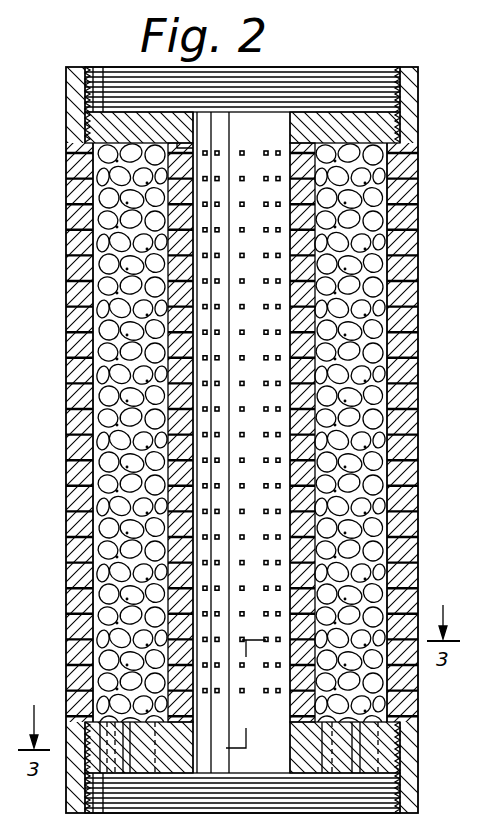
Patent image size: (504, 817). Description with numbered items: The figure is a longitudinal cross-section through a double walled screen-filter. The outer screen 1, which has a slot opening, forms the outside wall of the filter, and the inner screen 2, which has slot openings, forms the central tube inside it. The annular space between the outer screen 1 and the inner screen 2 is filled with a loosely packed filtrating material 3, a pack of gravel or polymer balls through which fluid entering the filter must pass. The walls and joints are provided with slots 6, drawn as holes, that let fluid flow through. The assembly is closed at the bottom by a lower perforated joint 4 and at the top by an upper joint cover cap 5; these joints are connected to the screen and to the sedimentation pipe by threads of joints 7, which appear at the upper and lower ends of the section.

The outer screen 1 is at (415, 548).
The inner screen 2 is at (180, 522).
The loosely packed filtrating material 3 is at (112, 410).
The lower perforated joint 4 is at (395, 733).
The upper joint cover cap 5 is at (385, 130).
The slots 6 is at (242, 284).
The threads of joints 7 is at (398, 795).